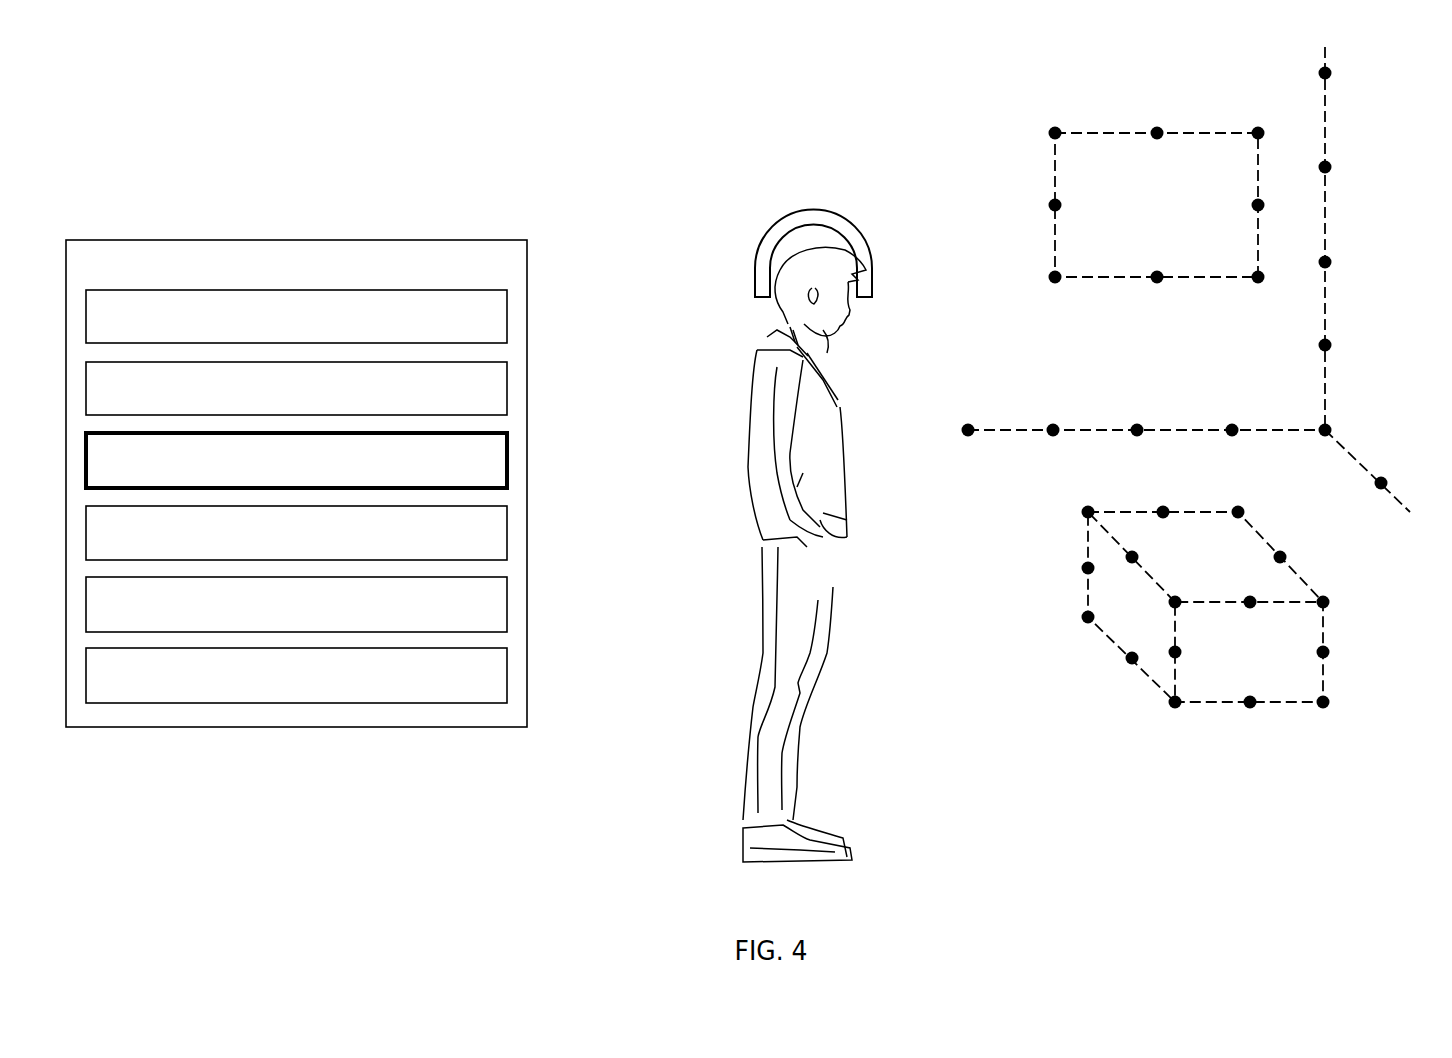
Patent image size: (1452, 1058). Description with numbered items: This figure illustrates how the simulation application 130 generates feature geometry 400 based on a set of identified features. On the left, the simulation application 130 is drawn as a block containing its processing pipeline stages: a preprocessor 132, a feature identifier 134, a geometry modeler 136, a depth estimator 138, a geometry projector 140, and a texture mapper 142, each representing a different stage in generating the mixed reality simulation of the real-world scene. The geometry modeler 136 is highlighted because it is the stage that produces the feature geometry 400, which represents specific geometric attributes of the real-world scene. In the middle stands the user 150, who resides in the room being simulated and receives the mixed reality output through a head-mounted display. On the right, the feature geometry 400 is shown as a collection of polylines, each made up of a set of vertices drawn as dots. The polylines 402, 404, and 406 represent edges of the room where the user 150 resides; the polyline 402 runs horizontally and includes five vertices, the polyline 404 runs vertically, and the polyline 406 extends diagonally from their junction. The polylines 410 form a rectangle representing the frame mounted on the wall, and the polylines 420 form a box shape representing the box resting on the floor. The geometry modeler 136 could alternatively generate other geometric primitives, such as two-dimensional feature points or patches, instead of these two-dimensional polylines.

The simulation application 130 is at (296, 483).
The preprocessor 132 is at (296, 316).
The feature identifier 134 is at (296, 388).
The geometry modeler 136 is at (296, 460).
The depth estimator 138 is at (296, 533).
The geometry projector 140 is at (296, 604).
The texture mapper 142 is at (296, 675).
The user 150 is at (748, 420).
The feature geometry 400 is at (836, 138).
The polyline 402 is at (1182, 430).
The polyline 404 is at (1325, 212).
The polyline 406 is at (1350, 457).
The polylines 410 is at (1123, 133).
The polylines 420 is at (1305, 582).